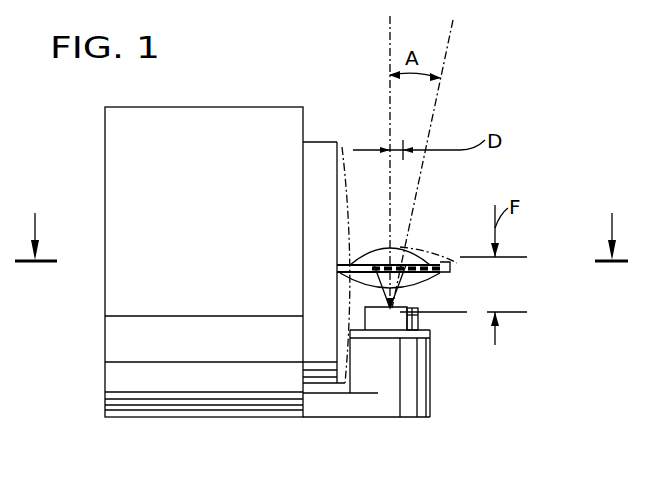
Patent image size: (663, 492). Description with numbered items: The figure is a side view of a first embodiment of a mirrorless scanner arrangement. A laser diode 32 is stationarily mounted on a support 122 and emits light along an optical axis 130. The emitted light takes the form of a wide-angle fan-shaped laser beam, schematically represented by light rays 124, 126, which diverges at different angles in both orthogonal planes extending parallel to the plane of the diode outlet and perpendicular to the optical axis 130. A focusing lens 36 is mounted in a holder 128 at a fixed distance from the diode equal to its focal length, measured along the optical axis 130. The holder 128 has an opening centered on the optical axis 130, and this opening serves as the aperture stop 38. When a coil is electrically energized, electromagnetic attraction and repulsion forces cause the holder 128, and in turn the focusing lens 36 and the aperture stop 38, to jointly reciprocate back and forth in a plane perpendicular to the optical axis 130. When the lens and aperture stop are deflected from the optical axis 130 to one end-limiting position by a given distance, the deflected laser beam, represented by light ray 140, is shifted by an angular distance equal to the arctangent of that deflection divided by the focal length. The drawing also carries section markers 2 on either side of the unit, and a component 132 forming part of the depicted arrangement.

The section line 2- 2 is at (321, 254).
The laser diode 32 is at (413, 318).
The focusing lens 36 is at (380, 250).
The aperture stop 38 is at (345, 252).
The support 122 is at (388, 403).
The light ray 124 is at (405, 284).
The light ray 126 is at (348, 277).
The holder 128 is at (452, 268).
The optical axis 130 is at (390, 32).
The main body 132 is at (123, 346).
The light ray 140 is at (451, 38).